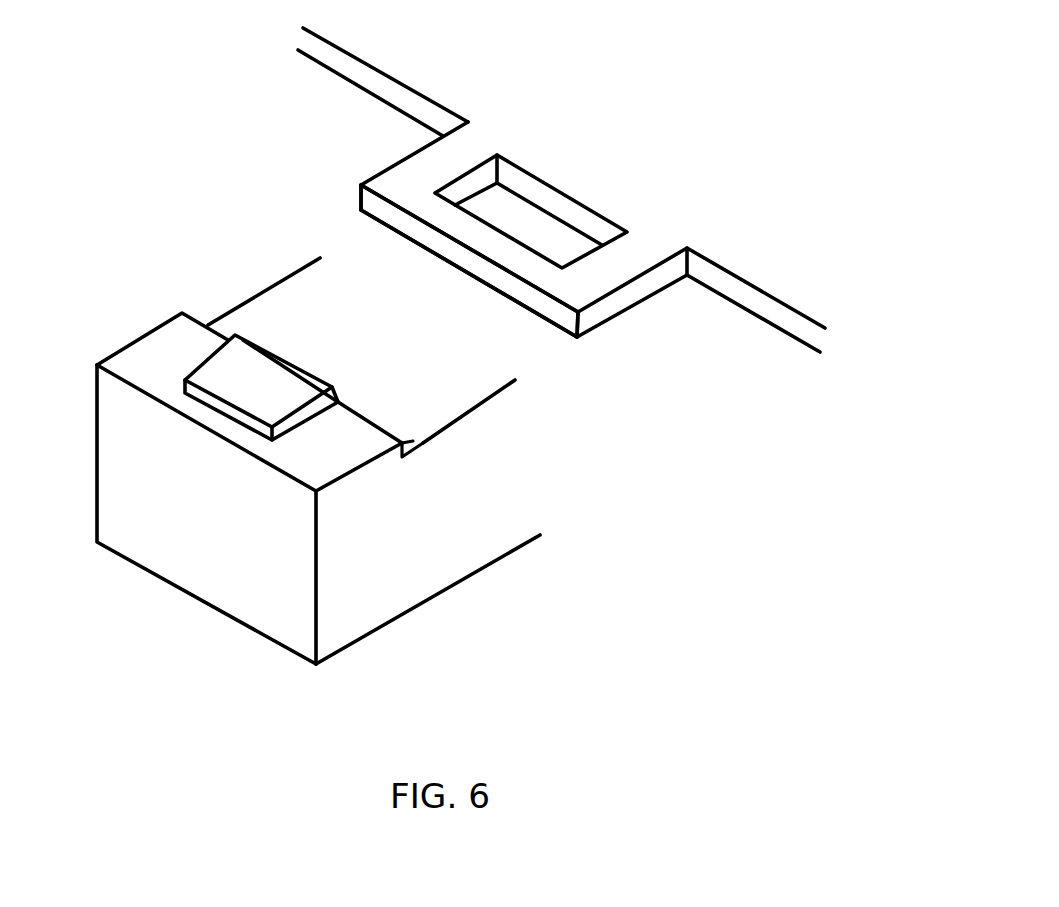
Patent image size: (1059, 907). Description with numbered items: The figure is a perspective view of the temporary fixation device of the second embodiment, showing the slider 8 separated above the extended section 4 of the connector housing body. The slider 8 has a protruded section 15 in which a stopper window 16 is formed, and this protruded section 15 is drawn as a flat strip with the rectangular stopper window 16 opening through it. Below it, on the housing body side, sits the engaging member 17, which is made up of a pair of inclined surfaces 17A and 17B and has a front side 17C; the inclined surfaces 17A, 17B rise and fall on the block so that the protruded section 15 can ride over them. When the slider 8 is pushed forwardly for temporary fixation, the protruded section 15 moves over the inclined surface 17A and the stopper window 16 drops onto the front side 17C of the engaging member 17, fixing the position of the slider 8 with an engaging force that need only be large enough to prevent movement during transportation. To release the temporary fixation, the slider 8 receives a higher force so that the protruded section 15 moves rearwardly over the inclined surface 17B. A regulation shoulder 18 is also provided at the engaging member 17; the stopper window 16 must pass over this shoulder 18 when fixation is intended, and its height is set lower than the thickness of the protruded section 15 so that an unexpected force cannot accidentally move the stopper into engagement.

The extended section 4 is at (390, 592).
The slider 8 is at (592, 128).
The protruded section 15 is at (477, 238).
The stopper window 16 is at (547, 233).
The engaging member 17 is at (268, 238).
The inclined surface 17A is at (265, 350).
The inclined surface 17B is at (217, 370).
The front side 17C is at (195, 398).
The regulation shoulder 18 is at (423, 444).